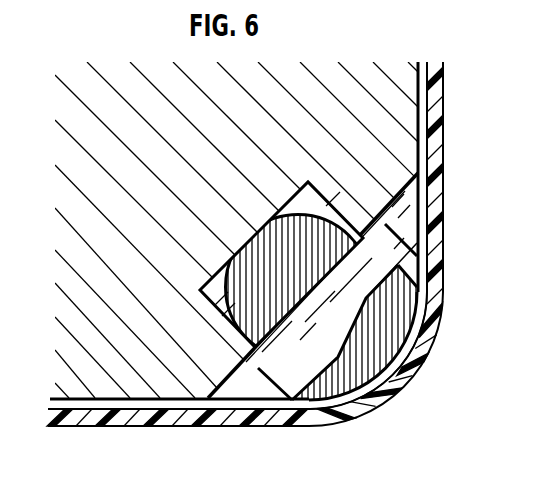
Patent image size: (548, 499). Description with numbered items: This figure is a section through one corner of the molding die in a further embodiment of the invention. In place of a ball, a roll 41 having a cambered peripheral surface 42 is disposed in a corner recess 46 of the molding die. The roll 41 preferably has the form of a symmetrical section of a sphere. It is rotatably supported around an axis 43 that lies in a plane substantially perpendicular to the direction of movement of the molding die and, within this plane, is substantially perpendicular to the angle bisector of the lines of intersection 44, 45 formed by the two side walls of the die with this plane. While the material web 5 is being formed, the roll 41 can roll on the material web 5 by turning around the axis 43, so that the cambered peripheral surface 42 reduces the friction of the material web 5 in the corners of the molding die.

The material web 5 is at (437, 120).
The roll 41 is at (392, 355).
The cambered peripheral surface 42 is at (392, 390).
The axis 43 is at (272, 372).
The line of intersection 44 is at (419, 216).
The line of intersection 45 is at (163, 396).
The corner recess 46 is at (318, 198).